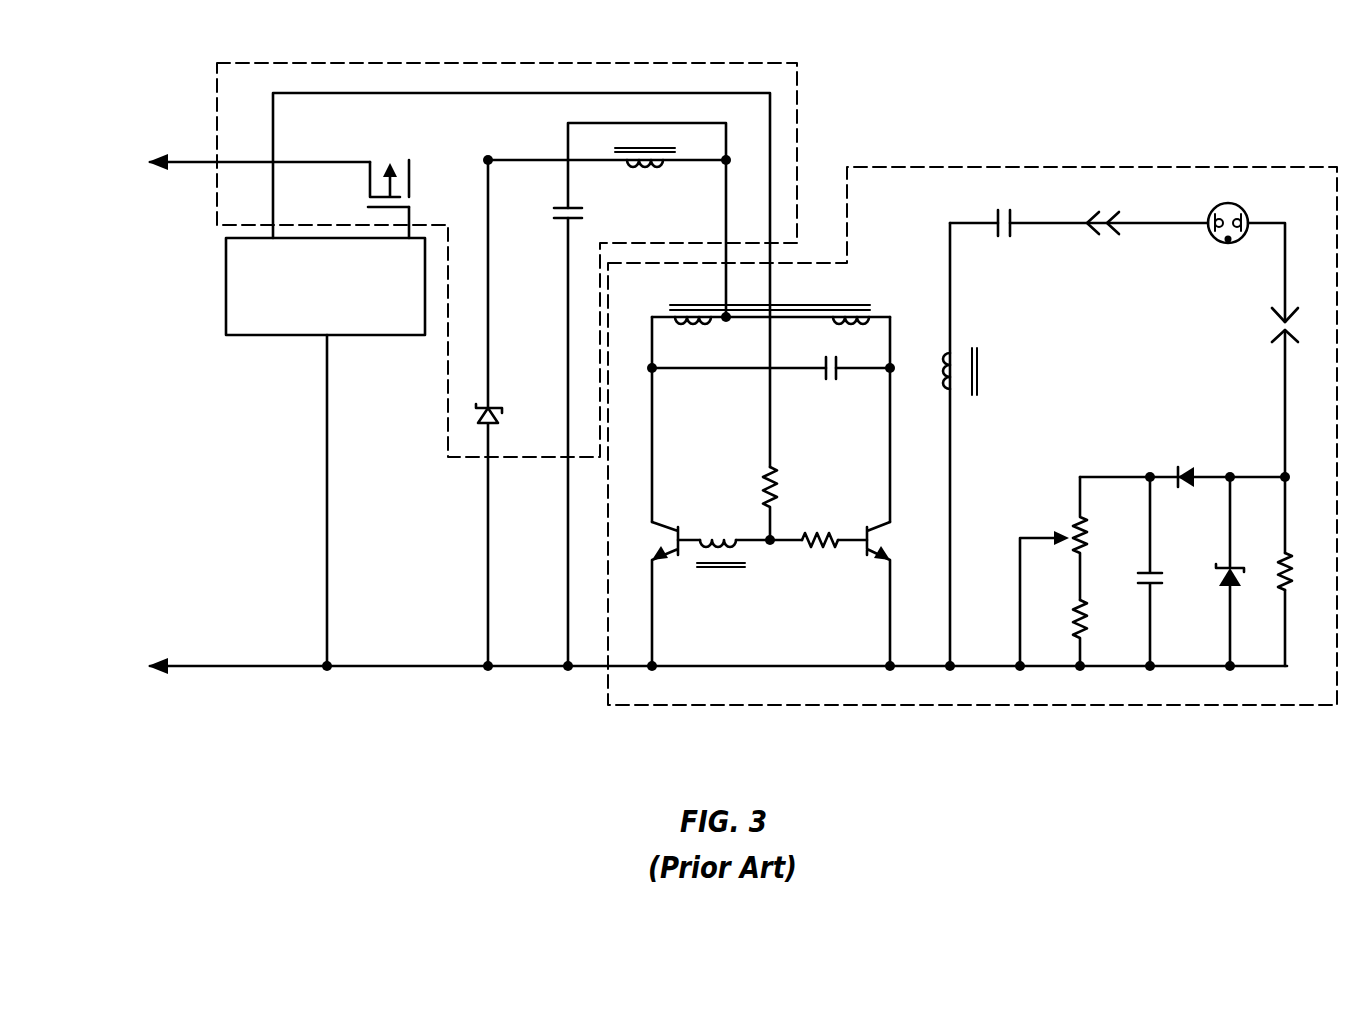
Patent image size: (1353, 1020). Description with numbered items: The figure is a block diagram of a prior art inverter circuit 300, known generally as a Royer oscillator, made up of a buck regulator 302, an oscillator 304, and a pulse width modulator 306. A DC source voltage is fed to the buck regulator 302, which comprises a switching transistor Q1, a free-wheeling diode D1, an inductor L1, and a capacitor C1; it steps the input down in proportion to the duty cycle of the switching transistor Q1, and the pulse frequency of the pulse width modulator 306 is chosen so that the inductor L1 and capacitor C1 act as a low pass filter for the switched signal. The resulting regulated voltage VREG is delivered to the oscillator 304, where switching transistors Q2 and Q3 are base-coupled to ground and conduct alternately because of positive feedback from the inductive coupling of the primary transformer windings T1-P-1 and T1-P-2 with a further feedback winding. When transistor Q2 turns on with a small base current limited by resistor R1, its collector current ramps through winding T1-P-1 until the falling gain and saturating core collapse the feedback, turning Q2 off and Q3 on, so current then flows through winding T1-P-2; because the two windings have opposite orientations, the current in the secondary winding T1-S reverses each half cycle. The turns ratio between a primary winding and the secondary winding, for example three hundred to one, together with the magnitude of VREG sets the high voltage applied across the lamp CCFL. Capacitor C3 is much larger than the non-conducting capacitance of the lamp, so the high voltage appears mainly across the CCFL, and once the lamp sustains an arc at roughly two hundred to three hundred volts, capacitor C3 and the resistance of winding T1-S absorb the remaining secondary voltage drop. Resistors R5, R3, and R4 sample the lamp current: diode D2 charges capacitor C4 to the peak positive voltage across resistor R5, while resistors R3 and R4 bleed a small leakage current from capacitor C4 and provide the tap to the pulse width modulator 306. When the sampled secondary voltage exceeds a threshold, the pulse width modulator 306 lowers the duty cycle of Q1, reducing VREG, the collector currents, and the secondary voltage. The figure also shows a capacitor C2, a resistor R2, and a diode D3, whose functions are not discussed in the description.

The inverter circuit 300 is at (1027, 93).
The buck regulator 302 is at (712, 62).
The oscillator 304 is at (1245, 166).
The pulse width modulator 306 is at (350, 335).
The switching transistor Q1 is at (388, 164).
The capacitor C1 is at (586, 213).
The inductor L1 is at (645, 180).
The regulated voltage VREG is at (738, 155).
The free-wheeling diode D1 is at (508, 424).
The primary transformer winding T1-P-1 is at (767, 296).
The primary transformer winding T1-P-2 is at (835, 296).
The secondary winding T1-S is at (996, 371).
The resonant capacitor C2 is at (830, 388).
The resistor R1 is at (791, 503).
The resistor R2 is at (820, 561).
The switching transistor Q2 is at (649, 594).
The switching transistor Q3 is at (897, 594).
The capacitor C3 is at (1004, 242).
The cold cathode fluorescent lamp CCFL is at (1227, 245).
The diode D2 is at (1184, 459).
The diode D3 is at (1212, 571).
The resistor R3 is at (1072, 571).
The resistor R4 is at (1099, 633).
The resistor R5 is at (1304, 573).
The capacitor C4 is at (1132, 571).